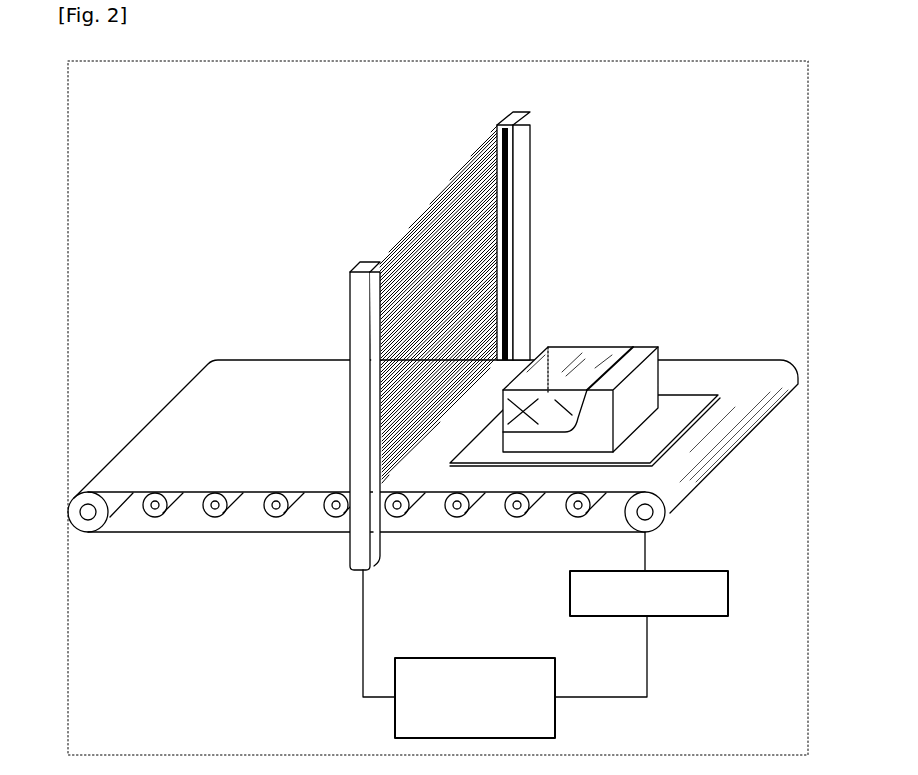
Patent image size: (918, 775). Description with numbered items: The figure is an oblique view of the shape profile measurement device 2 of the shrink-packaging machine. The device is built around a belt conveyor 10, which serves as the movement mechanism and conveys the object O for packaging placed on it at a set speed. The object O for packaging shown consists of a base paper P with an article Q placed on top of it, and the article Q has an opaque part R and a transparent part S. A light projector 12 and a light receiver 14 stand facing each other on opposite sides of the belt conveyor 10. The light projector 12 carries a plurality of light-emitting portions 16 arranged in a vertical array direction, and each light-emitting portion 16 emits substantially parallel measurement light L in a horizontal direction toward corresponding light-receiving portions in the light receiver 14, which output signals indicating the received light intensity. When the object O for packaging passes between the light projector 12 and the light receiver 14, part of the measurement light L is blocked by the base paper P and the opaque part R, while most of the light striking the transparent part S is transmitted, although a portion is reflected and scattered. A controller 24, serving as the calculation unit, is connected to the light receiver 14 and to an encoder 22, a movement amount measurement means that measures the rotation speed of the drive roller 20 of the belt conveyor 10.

The shape profile measurement device 2 is at (632, 143).
The belt conveyor 10 is at (735, 452).
The light projector 12 is at (514, 133).
The light receiver 14 is at (351, 283).
The light-emitting portion 16 is at (513, 177).
The drive roller 20 is at (668, 519).
The encoder 22 is at (729, 606).
The controller 24 is at (556, 731).
The measurement light L is at (434, 198).
The object for packaging O is at (705, 285).
The base paper P is at (676, 405).
The article Q is at (640, 346).
The opaque part R is at (634, 360).
The transparent part S is at (572, 347).